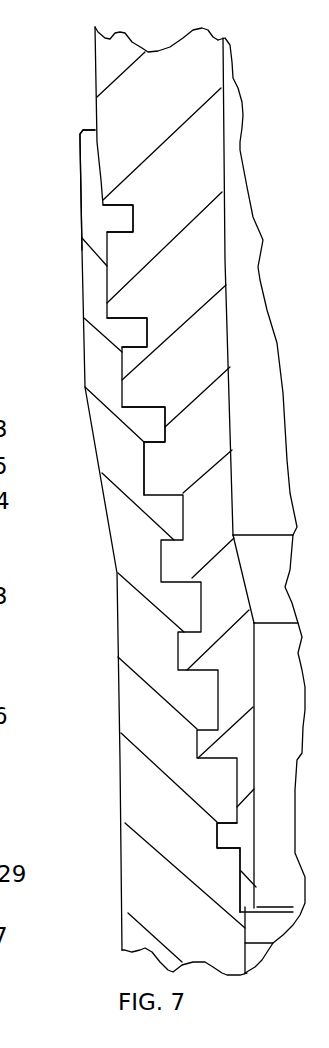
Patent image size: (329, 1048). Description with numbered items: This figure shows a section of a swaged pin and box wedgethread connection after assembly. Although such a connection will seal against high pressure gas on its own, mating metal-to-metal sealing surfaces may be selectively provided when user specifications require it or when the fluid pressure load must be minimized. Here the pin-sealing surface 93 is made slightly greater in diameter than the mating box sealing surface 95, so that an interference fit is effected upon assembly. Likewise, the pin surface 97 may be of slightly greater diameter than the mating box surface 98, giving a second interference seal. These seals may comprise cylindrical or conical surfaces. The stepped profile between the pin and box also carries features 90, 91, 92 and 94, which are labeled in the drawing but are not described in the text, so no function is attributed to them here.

The annular tooth 90 is at (124, 381).
The stepped shoulder 91 is at (143, 468).
The upper tooth 92 is at (98, 208).
The pin-sealing surface 93 is at (99, 172).
The lower tooth 94 is at (217, 833).
The box sealing surface 95 is at (103, 182).
The pin surface 97 is at (243, 893).
The box surface 98 is at (257, 876).